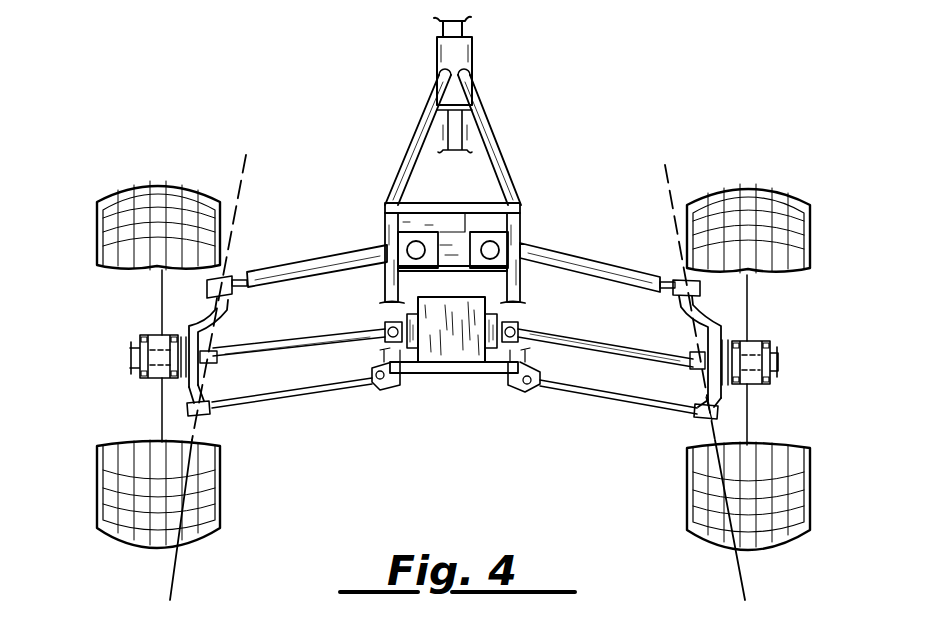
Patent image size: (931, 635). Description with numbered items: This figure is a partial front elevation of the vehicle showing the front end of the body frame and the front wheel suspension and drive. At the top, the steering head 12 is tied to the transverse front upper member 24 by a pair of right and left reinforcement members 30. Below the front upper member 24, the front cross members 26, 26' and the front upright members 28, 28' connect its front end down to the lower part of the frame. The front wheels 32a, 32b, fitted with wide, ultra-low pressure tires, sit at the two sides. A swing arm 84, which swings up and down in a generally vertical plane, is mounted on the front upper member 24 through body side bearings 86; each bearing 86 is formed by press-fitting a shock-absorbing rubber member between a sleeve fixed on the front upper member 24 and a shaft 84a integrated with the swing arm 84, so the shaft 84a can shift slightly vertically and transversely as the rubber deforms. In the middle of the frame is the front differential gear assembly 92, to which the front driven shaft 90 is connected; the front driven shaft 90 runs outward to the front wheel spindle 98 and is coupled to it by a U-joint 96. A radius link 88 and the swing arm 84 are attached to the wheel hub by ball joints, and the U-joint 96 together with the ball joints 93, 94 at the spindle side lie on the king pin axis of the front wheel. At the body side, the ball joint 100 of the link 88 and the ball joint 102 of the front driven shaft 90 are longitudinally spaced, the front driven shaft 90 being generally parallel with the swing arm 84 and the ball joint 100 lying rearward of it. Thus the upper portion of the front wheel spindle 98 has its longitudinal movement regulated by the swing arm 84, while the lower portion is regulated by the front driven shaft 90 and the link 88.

The steering head 12 is at (472, 38).
The reinforcement member 30 is at (428, 101).
The front upper member 24 is at (430, 232).
The front cross member 26' is at (444, 197).
The body side bearing 86 is at (492, 242).
The shaft 84a is at (517, 203).
The swing arm 84 is at (570, 255).
The front upright member 28' is at (351, 265).
The front upright member 28 is at (545, 260).
The front cross member 26 is at (452, 375).
The ball joint 102 is at (524, 331).
The ball joint 100 is at (522, 385).
The front differential gear assembly 92 is at (402, 368).
The front driven shaft 90 is at (606, 355).
The radius link 88 is at (577, 394).
The ball joint 93 is at (687, 290).
The front wheel spindle 98 is at (722, 328).
The U-joint 96 is at (693, 395).
The ball joint 94 is at (707, 420).
The front wheel 32a is at (770, 185).
The front wheel 32b is at (128, 185).